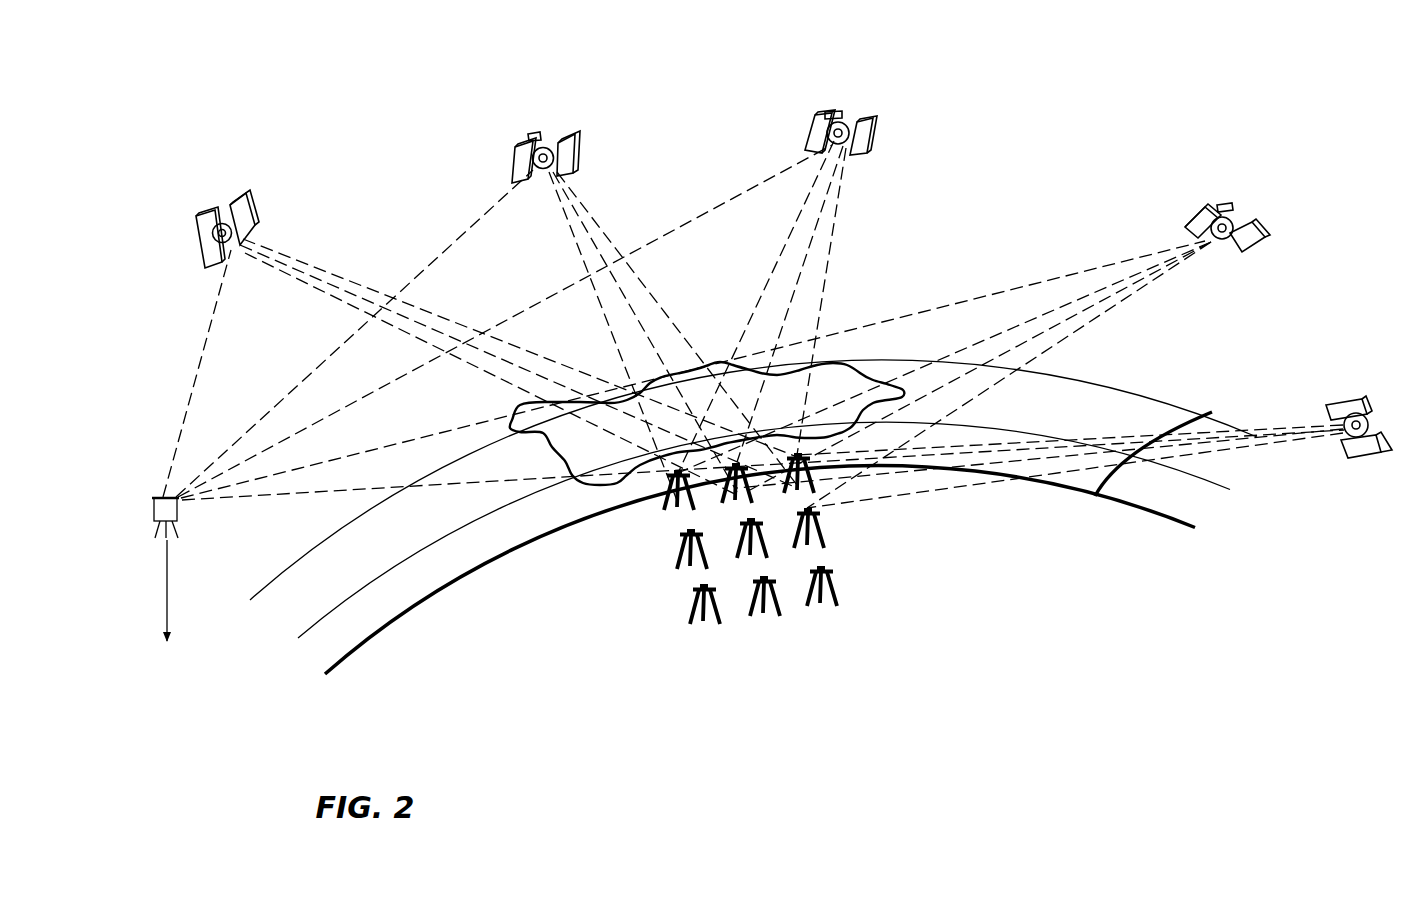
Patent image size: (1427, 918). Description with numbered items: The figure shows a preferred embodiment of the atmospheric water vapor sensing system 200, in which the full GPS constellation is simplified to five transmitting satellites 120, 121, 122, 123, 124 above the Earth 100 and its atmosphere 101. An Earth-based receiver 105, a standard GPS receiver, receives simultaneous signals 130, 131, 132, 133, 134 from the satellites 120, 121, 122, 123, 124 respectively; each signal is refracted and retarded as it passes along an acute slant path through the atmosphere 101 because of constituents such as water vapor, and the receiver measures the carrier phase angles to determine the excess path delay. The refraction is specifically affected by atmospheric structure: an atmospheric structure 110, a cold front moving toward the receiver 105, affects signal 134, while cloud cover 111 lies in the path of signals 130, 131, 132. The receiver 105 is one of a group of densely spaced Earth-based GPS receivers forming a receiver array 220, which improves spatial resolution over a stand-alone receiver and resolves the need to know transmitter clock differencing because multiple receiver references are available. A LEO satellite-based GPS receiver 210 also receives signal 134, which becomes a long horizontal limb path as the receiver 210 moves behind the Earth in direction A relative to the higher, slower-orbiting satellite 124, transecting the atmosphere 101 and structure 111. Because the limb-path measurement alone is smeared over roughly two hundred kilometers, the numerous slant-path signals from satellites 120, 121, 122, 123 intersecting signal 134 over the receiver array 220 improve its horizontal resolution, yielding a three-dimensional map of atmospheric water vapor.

The Earth 100 is at (384, 632).
The atmosphere 101 is at (236, 600).
The receiver 105 is at (667, 498).
The atmospheric structure 110 is at (1117, 478).
The cloud cover 111 is at (583, 488).
The transmitting satellite 120 is at (222, 223).
The transmitting satellite 121 is at (548, 146).
The transmitting satellite 122 is at (851, 118).
The transmitting satellite 123 is at (1238, 218).
The transmitting satellite 124 is at (1368, 423).
The signal 130 is at (470, 372).
The signal 131 is at (627, 364).
The signal 132 is at (765, 296).
The signal 133 is at (996, 333).
The signal 134 is at (1030, 445).
The atmospheric water vapor sensing system 200 is at (948, 549).
The LEO satellite-based GPS receiver 210 is at (147, 512).
The receiver array 220 is at (714, 571).